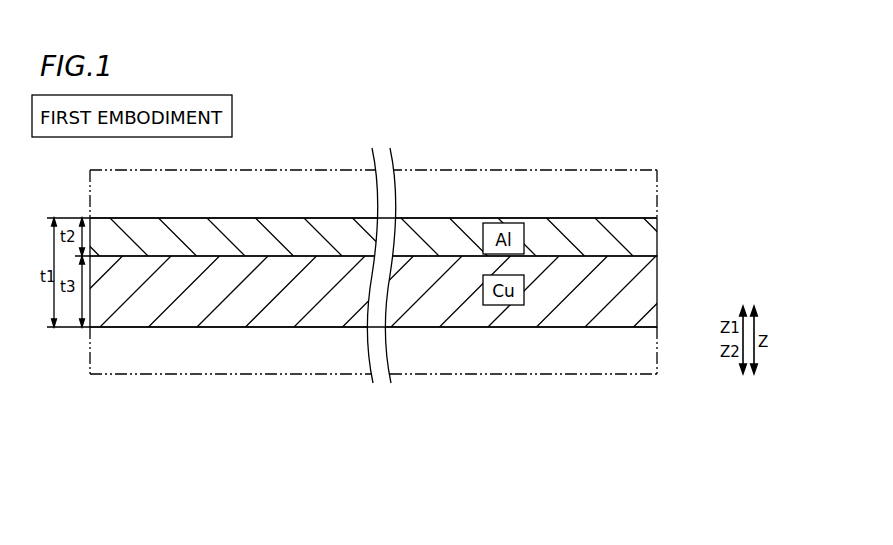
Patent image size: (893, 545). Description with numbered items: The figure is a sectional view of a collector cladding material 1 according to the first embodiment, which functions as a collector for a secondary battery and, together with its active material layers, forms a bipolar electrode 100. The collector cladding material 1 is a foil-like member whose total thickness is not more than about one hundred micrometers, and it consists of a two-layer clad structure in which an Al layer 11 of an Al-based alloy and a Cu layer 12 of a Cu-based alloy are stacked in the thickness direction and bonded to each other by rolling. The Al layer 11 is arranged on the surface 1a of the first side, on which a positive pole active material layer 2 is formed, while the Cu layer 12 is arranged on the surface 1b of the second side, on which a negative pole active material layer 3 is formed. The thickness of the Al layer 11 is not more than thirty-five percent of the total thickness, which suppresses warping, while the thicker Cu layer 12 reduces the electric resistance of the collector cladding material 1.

The bipolar electrode 100 is at (672, 165).
The collector cladding material 1 is at (398, 272).
The surface of first side 1a is at (568, 217).
The surface of second side 1b is at (565, 328).
The positive pole active material layer 2 is at (657, 190).
The negative pole active material layer 3 is at (657, 373).
The Al layer 11 is at (622, 235).
The Cu layer 12 is at (380, 291).